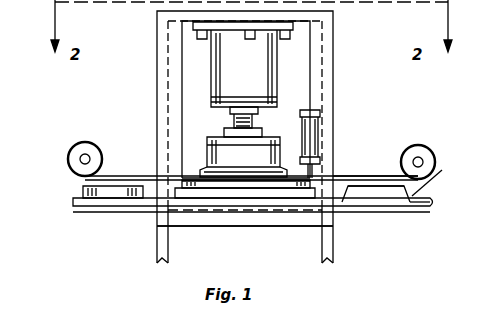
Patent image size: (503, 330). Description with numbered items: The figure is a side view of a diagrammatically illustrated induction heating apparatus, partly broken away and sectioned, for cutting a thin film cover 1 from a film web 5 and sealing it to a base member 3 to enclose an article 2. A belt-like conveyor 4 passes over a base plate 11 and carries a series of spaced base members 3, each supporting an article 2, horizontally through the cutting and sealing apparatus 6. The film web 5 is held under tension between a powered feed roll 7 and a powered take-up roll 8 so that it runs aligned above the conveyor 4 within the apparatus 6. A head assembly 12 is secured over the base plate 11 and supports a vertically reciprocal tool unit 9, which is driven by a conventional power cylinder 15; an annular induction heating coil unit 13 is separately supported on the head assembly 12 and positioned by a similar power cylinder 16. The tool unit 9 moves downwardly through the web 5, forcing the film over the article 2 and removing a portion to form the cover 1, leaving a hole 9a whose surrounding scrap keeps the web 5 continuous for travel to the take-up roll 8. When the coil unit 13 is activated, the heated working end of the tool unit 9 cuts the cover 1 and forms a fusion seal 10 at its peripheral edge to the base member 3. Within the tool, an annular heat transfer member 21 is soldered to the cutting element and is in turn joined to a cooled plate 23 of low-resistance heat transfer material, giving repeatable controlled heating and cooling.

The film cover 1 is at (368, 186).
The article 2 is at (85, 190).
The base member 3 is at (425, 201).
The conveyor 4 is at (112, 207).
The film web 5 is at (128, 176).
The cutting and sealing apparatus 6 is at (269, 101).
The feed roll 7 is at (90, 142).
The take-up roll 8 is at (422, 145).
The tool unit 9 is at (255, 96).
The hole 9a is at (355, 176).
The seal 10 is at (441, 176).
The base plate 11 is at (230, 214).
The head assembly 12 is at (157, 72).
The induction heating coil unit 13 is at (198, 196).
The power cylinder 15 is at (266, 72).
The power cylinder 16 is at (322, 136).
The heat transfer member 21 is at (210, 152).
The cooled plate 23 is at (292, 123).